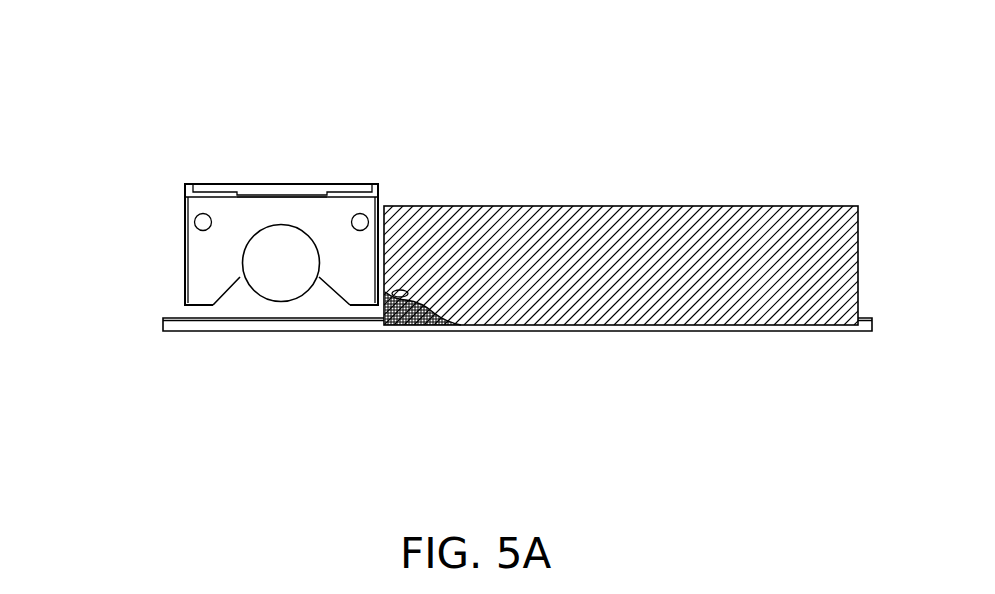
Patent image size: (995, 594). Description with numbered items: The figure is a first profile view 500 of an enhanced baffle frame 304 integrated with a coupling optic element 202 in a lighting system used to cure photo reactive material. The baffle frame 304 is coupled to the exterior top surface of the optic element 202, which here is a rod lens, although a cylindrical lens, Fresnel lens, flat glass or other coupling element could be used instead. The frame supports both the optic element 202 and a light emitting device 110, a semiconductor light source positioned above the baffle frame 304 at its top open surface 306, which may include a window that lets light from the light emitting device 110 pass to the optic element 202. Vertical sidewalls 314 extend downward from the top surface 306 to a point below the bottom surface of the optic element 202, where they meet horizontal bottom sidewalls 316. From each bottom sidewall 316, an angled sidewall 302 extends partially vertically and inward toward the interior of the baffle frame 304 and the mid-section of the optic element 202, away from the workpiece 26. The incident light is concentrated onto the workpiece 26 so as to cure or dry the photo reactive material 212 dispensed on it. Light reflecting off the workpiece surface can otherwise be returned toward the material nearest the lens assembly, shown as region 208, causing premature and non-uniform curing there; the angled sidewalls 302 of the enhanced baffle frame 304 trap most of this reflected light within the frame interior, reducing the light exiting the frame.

The first profile view 500 is at (791, 39).
The light emitting device 110 is at (275, 190).
The photo reactive material 212 is at (627, 184).
The workpiece 26 is at (162, 328).
The optic element 202 is at (297, 301).
The region 208 is at (407, 310).
The angled sidewalls 302 is at (240, 277).
The baffle frame 304 is at (223, 245).
The top surface 306 is at (341, 201).
The vertical sidewalls 314 is at (185, 228).
The bottom sidewalls 316 is at (197, 304).